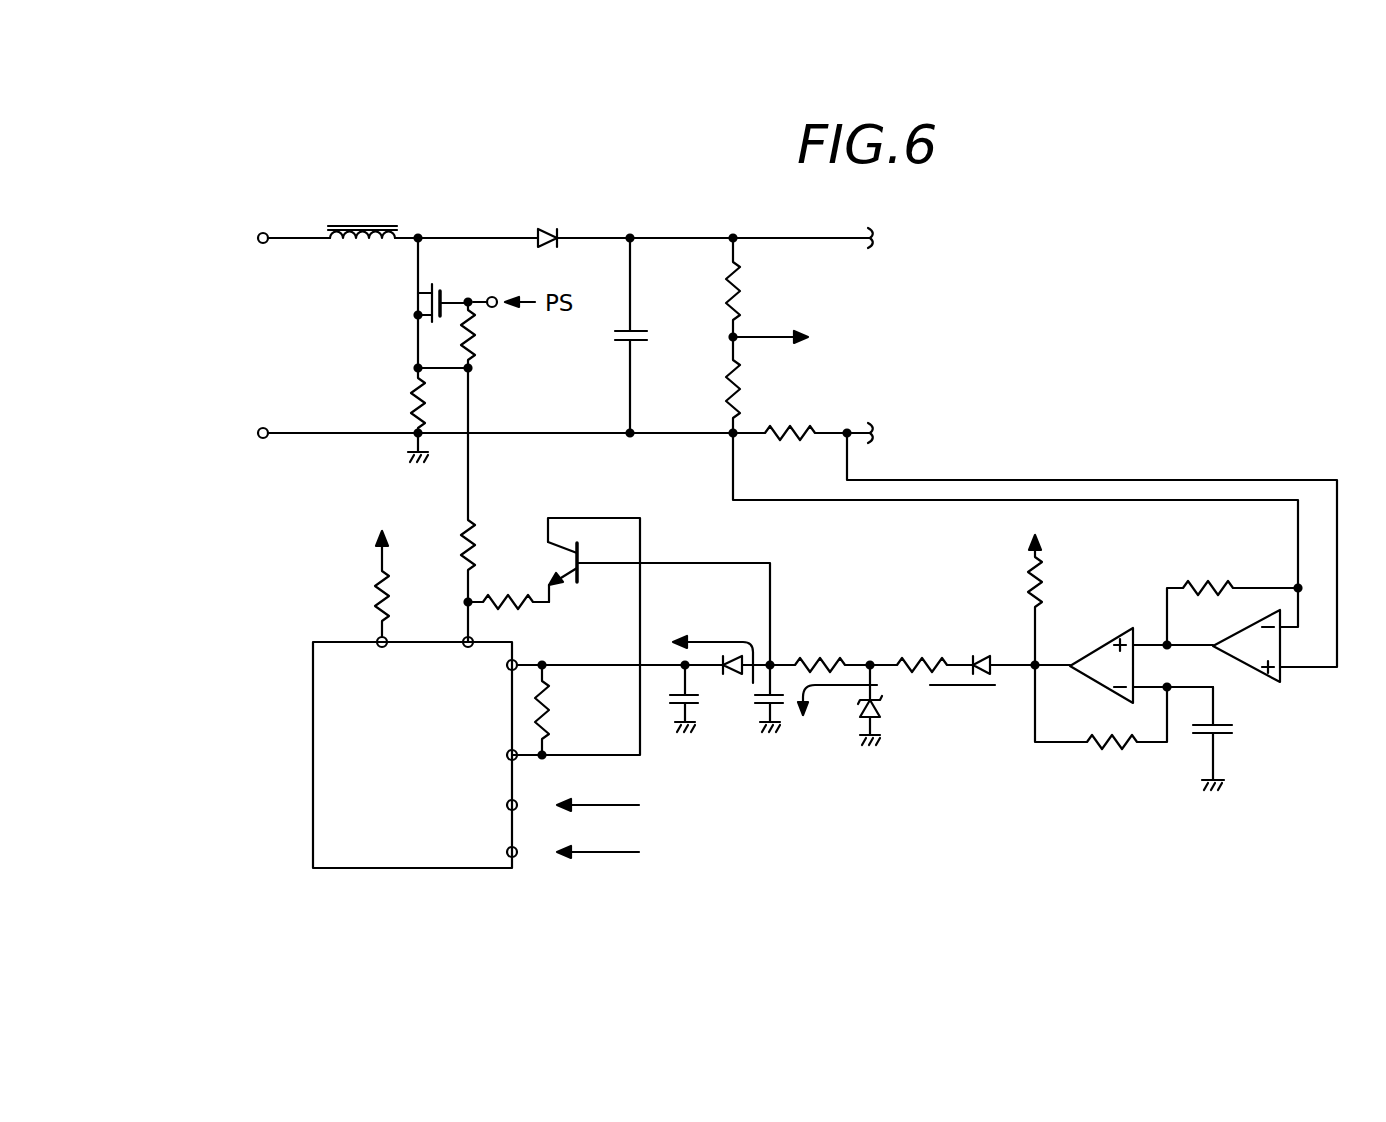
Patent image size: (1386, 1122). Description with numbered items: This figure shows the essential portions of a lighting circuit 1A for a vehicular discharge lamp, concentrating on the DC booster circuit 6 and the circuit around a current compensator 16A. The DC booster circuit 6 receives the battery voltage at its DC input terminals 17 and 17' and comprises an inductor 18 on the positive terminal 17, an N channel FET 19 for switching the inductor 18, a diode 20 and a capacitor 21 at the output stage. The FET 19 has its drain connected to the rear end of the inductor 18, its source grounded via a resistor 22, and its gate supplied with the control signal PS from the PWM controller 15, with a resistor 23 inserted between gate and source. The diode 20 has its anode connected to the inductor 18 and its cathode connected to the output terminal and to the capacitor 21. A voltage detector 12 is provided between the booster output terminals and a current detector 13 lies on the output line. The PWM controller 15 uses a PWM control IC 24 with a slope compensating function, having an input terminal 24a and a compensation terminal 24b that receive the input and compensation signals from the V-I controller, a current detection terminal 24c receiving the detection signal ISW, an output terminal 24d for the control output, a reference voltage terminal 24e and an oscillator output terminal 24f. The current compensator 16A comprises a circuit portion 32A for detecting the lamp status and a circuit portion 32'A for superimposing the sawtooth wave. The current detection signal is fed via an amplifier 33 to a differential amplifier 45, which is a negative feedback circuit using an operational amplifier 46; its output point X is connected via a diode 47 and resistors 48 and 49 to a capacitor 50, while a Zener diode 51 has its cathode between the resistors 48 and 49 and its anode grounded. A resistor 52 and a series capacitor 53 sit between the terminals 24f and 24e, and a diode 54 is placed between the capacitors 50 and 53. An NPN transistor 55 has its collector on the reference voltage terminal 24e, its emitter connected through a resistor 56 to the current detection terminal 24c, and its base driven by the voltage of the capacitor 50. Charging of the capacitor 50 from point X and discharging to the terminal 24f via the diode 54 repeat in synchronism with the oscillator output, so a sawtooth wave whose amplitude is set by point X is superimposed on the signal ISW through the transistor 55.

The lighting circuit 1A is at (208, 200).
The DC booster circuit 6 is at (700, 218).
The voltage detector 12 is at (758, 316).
The current detector 13 is at (812, 408).
The PWM controller 15 is at (362, 755).
The current compensator 16A is at (1155, 830).
The DC input terminal 17 is at (266, 200).
The DC input terminal 17' is at (257, 463).
The inductor 18 is at (381, 222).
The FET 19 is at (410, 298).
The diode 20 is at (548, 228).
The capacitor 21 is at (638, 330).
The resistor 22 is at (410, 393).
The resistor 23 is at (478, 337).
The PWM control IC 24 is at (312, 672).
The input terminal 24a is at (520, 810).
The compensation terminal 24b is at (520, 858).
The current detection terminal 24c is at (464, 637).
The output terminal 24d is at (378, 637).
The reference voltage terminal 24e is at (520, 760).
The output terminal of the oscillator 24f is at (517, 660).
The circuit portion 32'A is at (765, 570).
The circuit portion 32A is at (1178, 792).
The amplifier 33 is at (1272, 692).
The differential amplifier 45 is at (1103, 628).
The operational amplifier 46 is at (1097, 683).
The diode 47 is at (979, 655).
The resistor 48 is at (903, 656).
The resistor 49 is at (820, 656).
The capacitor 50 is at (785, 708).
The Zener diode 51 is at (880, 710).
The resistor 52 is at (552, 722).
The capacitor 53 is at (694, 708).
The diode 54 is at (742, 680).
The NPN transistor 55 is at (579, 574).
The resistor 56 is at (505, 595).